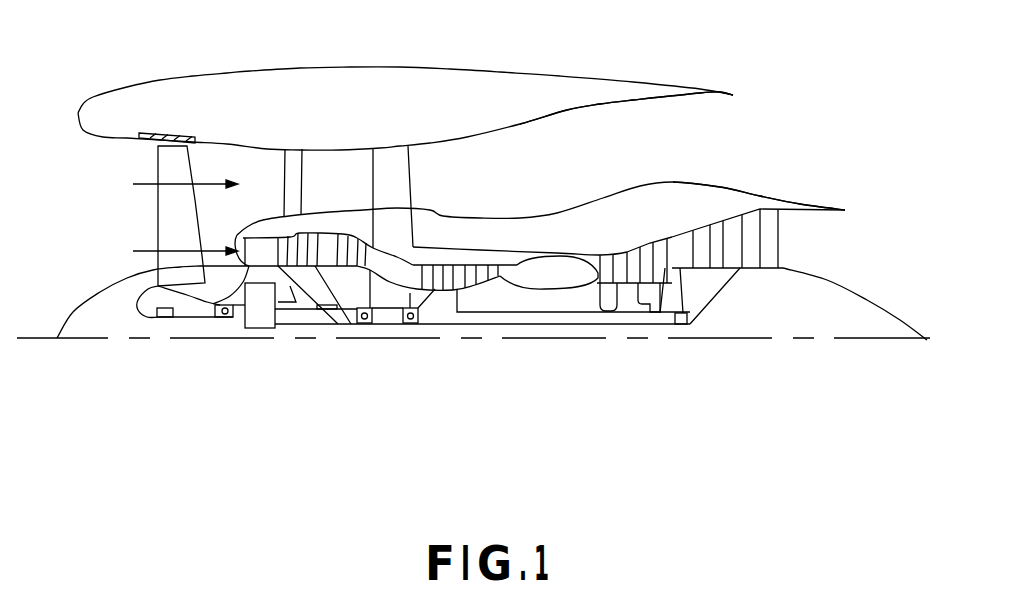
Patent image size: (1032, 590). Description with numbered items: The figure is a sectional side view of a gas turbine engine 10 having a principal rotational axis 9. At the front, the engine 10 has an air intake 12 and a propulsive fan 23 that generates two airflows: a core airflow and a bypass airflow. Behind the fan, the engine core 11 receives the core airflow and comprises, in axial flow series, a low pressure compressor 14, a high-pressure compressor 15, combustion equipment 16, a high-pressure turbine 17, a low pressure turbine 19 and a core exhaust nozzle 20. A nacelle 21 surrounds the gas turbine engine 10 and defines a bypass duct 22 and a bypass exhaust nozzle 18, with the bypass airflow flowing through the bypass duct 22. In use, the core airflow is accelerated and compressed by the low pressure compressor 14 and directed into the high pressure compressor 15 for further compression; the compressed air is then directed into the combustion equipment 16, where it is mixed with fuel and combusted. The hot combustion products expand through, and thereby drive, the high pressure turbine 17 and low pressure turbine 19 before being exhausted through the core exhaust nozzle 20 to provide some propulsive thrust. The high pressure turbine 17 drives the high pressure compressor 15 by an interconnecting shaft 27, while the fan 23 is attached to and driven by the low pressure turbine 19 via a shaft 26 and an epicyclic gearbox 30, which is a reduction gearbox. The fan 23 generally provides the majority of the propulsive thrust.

The principal rotational axis 9 is at (635, 340).
The gas turbine engine 10 is at (147, 79).
The core 11 is at (525, 222).
The air intake 12 is at (99, 160).
The low pressure compressor 14 is at (327, 245).
The high-pressure compressor 15 is at (475, 277).
The combustion equipment 16 is at (551, 274).
The high-pressure turbine 17 is at (614, 252).
The bypass exhaust nozzle 18 is at (735, 133).
The low pressure turbine 19 is at (750, 228).
The core exhaust nozzle 20 is at (824, 239).
The nacelle 21 is at (385, 80).
The bypass duct 22 is at (677, 152).
The propulsive fan 23 is at (158, 217).
The shaft 26 is at (468, 326).
The interconnecting shaft 27 is at (505, 326).
The epicyclic gearbox 30 is at (258, 318).